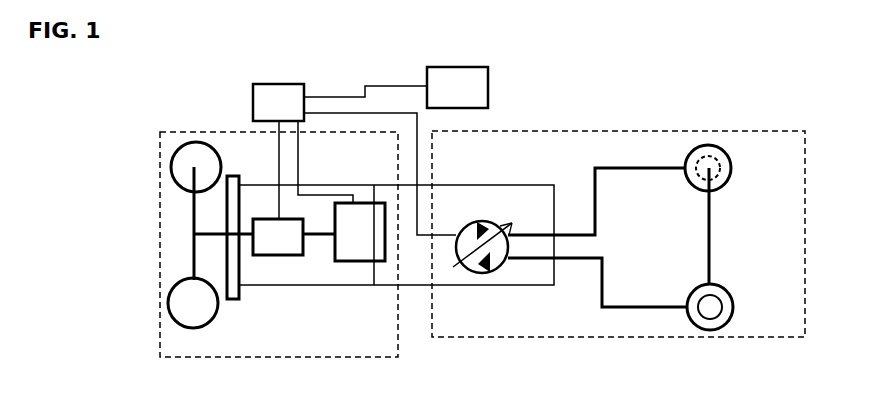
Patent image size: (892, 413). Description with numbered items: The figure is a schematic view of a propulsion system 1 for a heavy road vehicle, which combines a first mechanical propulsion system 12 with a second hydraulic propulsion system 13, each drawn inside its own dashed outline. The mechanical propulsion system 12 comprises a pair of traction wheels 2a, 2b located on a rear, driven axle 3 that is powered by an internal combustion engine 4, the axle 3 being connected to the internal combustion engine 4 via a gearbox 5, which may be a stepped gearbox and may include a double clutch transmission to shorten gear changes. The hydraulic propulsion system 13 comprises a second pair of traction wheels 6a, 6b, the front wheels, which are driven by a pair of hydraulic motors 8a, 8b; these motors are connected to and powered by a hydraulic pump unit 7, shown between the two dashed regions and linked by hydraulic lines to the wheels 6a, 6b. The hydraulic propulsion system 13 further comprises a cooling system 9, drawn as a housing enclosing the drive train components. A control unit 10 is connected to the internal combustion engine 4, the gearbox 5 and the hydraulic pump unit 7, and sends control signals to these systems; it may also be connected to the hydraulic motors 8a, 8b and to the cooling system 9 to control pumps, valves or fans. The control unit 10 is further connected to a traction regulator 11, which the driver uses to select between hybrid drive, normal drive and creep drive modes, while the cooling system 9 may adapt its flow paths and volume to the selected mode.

The propulsion system 1 is at (612, 98).
The traction wheel 2a is at (211, 142).
The traction wheel 2b is at (193, 328).
The rear driven axle 3 is at (203, 210).
The internal combustion engine 4 is at (360, 232).
The gearbox 5 is at (294, 237).
The traction wheel 6a is at (700, 147).
The traction wheel 6b is at (708, 330).
The hydraulic pump unit 7 is at (473, 272).
The hydraulic motor 8a is at (728, 175).
The hydraulic motor 8b is at (718, 307).
The cooling system 9 is at (268, 285).
The control unit 10 is at (354, 159).
The traction regulator 11 is at (457, 87).
The first mechanical propulsion system 12 is at (313, 357).
The second hydraulic propulsion system 13 is at (570, 337).